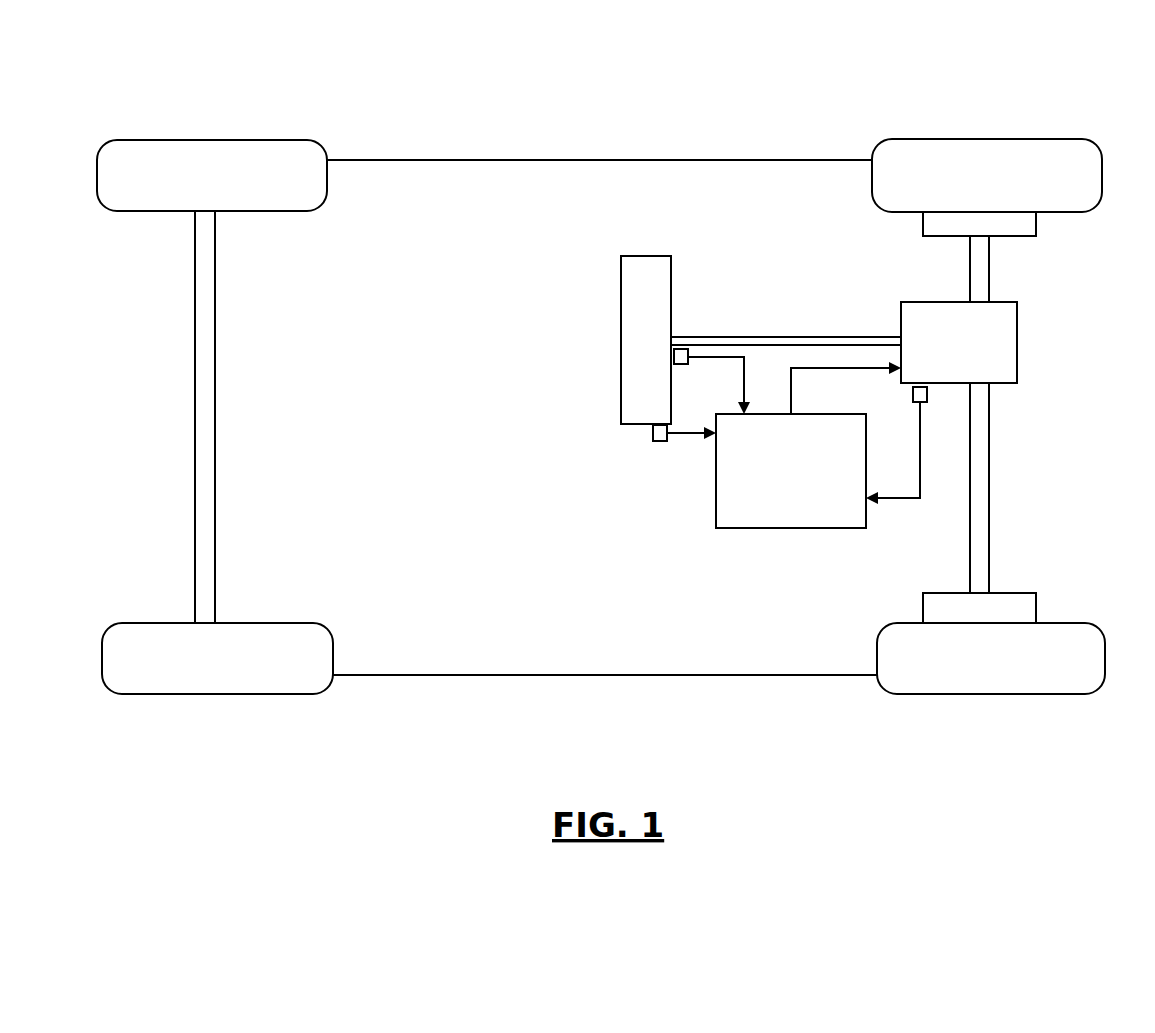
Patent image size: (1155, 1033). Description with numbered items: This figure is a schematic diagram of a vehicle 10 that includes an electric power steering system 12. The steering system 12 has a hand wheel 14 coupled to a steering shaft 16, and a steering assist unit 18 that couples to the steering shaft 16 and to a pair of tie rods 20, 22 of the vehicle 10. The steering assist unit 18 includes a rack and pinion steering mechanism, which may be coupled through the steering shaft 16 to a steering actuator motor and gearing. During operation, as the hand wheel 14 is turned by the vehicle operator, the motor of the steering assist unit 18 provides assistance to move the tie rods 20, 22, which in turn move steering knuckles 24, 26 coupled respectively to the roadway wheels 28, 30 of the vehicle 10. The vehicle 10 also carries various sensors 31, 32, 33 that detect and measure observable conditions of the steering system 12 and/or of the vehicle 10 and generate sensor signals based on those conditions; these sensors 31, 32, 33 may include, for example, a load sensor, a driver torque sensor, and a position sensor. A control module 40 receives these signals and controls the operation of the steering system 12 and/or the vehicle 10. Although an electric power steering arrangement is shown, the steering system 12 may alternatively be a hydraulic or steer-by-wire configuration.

The vehicle 10 is at (646, 58).
The steering system 12 is at (758, 228).
The hand wheel 14 is at (642, 256).
The steering shaft 16 is at (756, 337).
The steering assist unit 18 is at (1017, 340).
The tie rod 20 is at (990, 283).
The tie rod 22 is at (990, 460).
The steering knuckle 24 is at (922, 214).
The steering knuckle 26 is at (952, 593).
The roadway wheel 28 is at (1025, 139).
The roadway wheel 30 is at (1043, 623).
The sensor 31 is at (680, 366).
The sensor 32 is at (928, 392).
The sensor 33 is at (660, 443).
The control module 40 is at (812, 414).